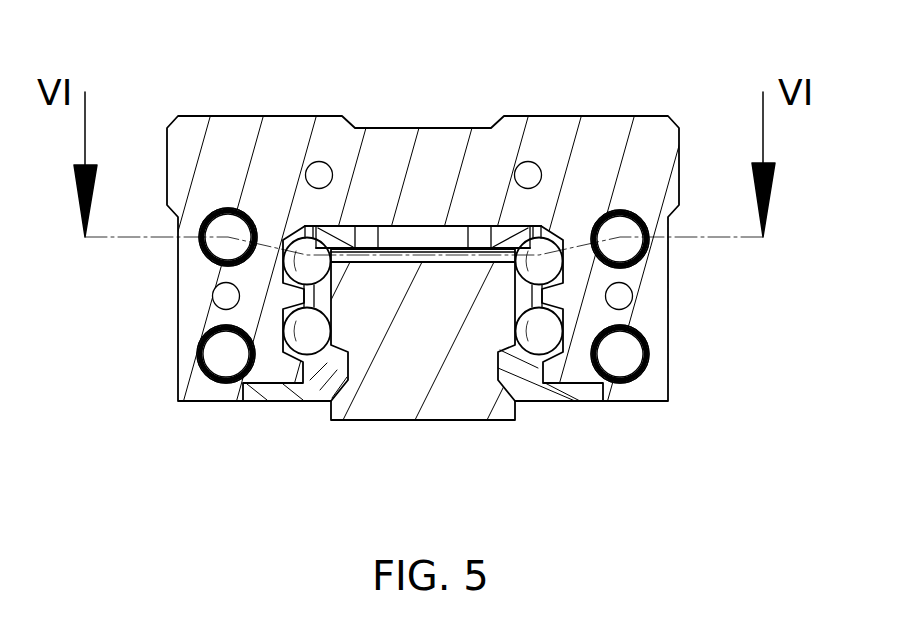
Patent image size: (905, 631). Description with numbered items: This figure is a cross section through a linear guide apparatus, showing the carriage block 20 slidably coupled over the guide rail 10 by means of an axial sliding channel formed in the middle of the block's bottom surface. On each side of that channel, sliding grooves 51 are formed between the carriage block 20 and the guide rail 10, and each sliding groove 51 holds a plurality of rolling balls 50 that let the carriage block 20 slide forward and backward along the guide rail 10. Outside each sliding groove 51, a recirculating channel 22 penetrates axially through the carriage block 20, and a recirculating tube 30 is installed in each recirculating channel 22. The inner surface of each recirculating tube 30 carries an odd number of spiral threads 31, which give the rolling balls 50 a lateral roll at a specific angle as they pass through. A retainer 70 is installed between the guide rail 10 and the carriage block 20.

The guide rail 10 is at (535, 418).
The carriage block 20 is at (460, 118).
The recirculating channel 22 is at (607, 212).
The recirculating tube 30 is at (633, 198).
The spiral thread 31 is at (202, 218).
The rolling ball 50 is at (188, 241).
The sliding groove 51 is at (517, 267).
The retainer 70 is at (333, 222).